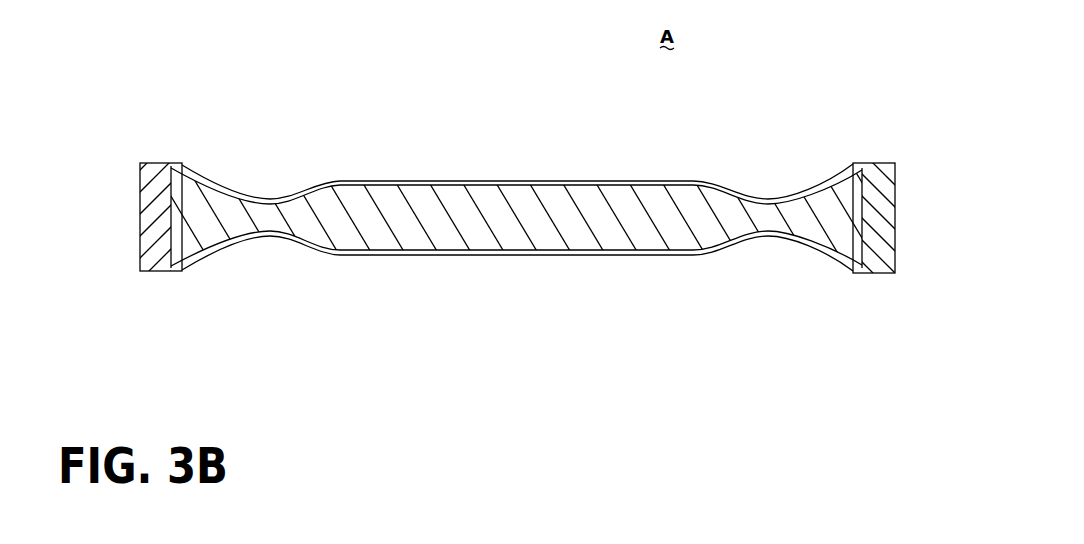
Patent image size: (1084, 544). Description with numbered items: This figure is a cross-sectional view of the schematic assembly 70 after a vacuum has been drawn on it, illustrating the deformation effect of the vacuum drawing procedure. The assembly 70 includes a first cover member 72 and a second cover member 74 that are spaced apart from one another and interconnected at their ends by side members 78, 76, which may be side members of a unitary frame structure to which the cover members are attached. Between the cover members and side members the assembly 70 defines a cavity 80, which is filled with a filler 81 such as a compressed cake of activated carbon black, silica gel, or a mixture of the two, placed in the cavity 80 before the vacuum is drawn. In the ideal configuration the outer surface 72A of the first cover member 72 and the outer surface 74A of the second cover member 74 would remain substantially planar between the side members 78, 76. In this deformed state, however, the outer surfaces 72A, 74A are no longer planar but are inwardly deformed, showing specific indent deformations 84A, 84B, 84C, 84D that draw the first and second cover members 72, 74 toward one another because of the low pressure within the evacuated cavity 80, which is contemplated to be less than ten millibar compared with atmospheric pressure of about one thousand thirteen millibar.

The schematic assembly 70 is at (521, 201).
The first cover member 72 is at (569, 181).
The outer surface of the first cover member 72A is at (393, 181).
The second cover member 74 is at (541, 257).
The outer surface of the second cover member 74A is at (398, 257).
The side member 76 is at (896, 207).
The side member 78 is at (138, 196).
The cavity 80 is at (627, 214).
The filler 81 is at (725, 215).
The indent deformation 84A is at (272, 193).
The indent deformation 84B is at (770, 194).
The indent deformation 84C is at (268, 240).
The indent deformation 84D is at (767, 245).